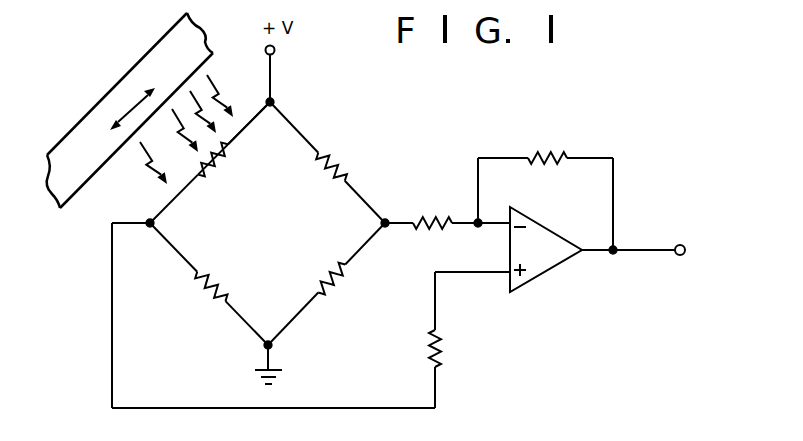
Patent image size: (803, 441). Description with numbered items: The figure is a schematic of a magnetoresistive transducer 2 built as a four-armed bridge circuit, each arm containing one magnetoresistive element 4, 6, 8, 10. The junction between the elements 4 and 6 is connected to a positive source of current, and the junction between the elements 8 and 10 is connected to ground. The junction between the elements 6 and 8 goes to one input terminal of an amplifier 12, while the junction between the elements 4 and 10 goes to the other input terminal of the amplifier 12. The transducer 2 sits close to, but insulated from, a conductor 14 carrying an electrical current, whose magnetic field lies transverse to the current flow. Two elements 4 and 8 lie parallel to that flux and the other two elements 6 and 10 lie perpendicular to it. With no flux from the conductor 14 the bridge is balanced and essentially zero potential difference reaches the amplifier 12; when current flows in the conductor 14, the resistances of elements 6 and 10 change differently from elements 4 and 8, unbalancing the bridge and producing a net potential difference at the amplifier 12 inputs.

The magnetoresistive transducer 2 is at (271, 223).
The magnetoresistive element 4 is at (331, 170).
The magnetoresistive element 6 is at (217, 160).
The magnetoresistive element 8 is at (205, 296).
The magnetoresistive element 10 is at (338, 284).
The amplifier 12 is at (562, 133).
The conductor 14 is at (101, 101).